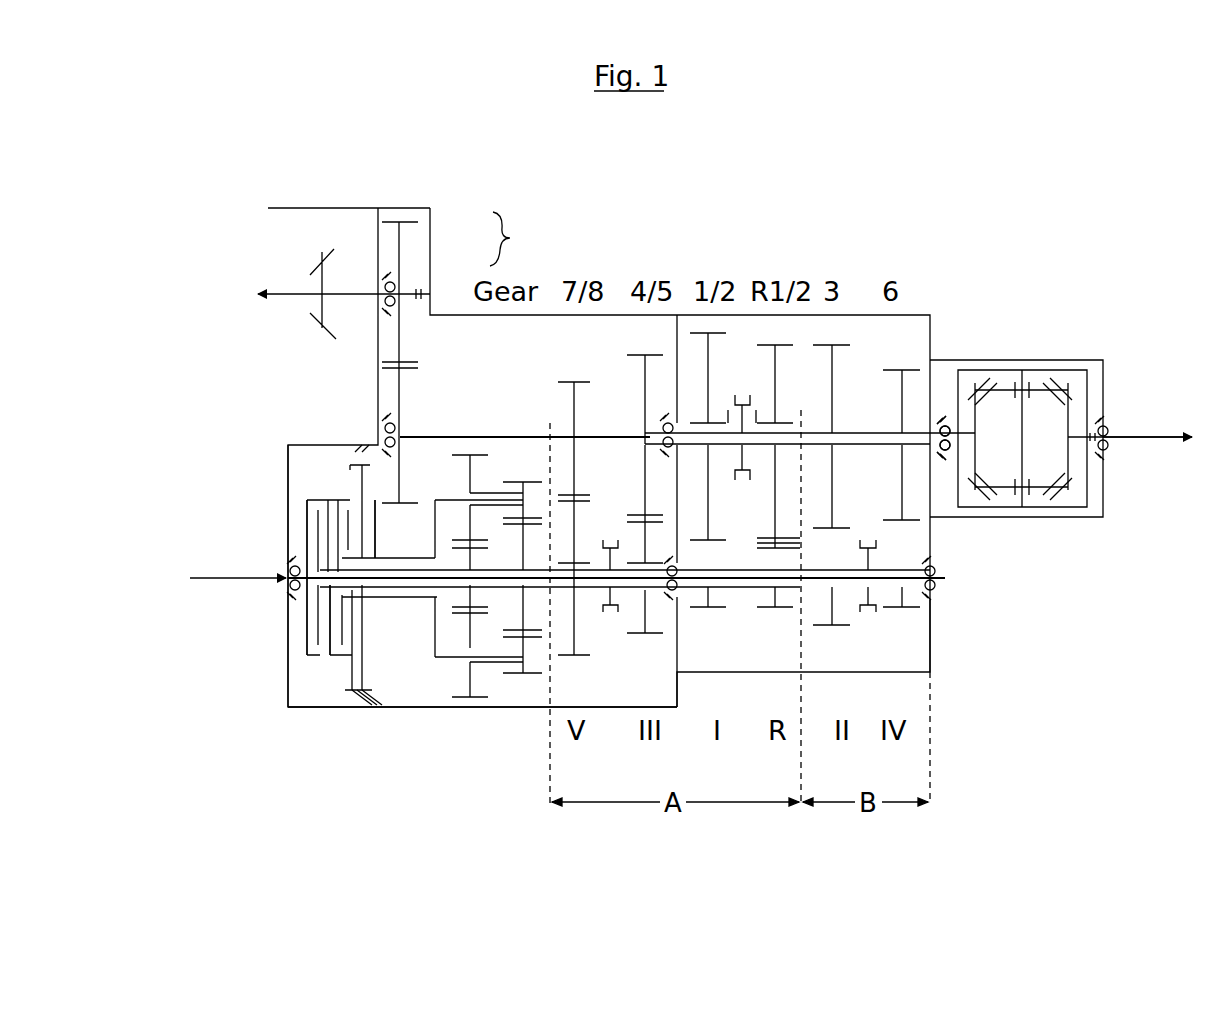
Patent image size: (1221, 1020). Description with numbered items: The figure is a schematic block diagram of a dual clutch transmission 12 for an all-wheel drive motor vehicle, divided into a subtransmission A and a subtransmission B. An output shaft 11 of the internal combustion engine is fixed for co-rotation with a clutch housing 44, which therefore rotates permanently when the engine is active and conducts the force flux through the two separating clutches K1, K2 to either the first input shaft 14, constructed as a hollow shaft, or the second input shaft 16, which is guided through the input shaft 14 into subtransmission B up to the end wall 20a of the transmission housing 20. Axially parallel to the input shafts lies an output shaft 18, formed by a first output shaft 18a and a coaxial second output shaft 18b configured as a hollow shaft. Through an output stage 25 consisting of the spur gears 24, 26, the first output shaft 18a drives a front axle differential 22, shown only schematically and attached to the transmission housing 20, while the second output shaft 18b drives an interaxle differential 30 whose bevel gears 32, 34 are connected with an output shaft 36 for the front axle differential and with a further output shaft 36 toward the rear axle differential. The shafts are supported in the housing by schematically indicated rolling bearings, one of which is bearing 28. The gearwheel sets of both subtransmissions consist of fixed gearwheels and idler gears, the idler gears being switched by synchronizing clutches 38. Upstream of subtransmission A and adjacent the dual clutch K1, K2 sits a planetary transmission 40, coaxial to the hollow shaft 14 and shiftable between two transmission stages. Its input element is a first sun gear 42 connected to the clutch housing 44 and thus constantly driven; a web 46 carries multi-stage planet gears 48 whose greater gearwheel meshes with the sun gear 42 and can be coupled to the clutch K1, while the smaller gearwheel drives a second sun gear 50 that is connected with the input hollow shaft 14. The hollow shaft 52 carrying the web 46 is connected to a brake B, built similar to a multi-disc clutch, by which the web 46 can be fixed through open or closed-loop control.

The output shaft of the internal combustion engine 11 is at (262, 576).
The dual clutch transmission 12 is at (936, 238).
The first transmission input shaft 14 is at (742, 568).
The second transmission input shaft 16 is at (896, 518).
The output shaft 18 is at (503, 430).
The first output shaft 18a is at (520, 432).
The second output shaft 18b is at (862, 430).
The transmission housing 20 is at (922, 311).
The end wall 20a is at (932, 640).
The front axle differential 22 is at (316, 244).
The spur gear 24 is at (400, 400).
The output stage 25 is at (516, 239).
The spur gear 26 is at (400, 262).
The bearing 28 is at (948, 418).
The interaxle differential 30 is at (1068, 354).
The bevel gear 32 is at (978, 458).
The bevel gear 34 is at (1075, 410).
The output shaft 36 is at (1118, 440).
The synchronizing clutch 38 is at (742, 392).
The planetary transmission 40 is at (437, 716).
The first sun gear 42 is at (468, 565).
The clutch housing 44 is at (305, 503).
The web 46 is at (435, 628).
The multi-stage planet gears 48 is at (498, 490).
The second sun gear 50 is at (522, 606).
The hollow shaft 52 is at (375, 540).
The separating clutch K1 is at (341, 660).
The separating clutch K2 is at (312, 660).
The brake B is at (376, 704).